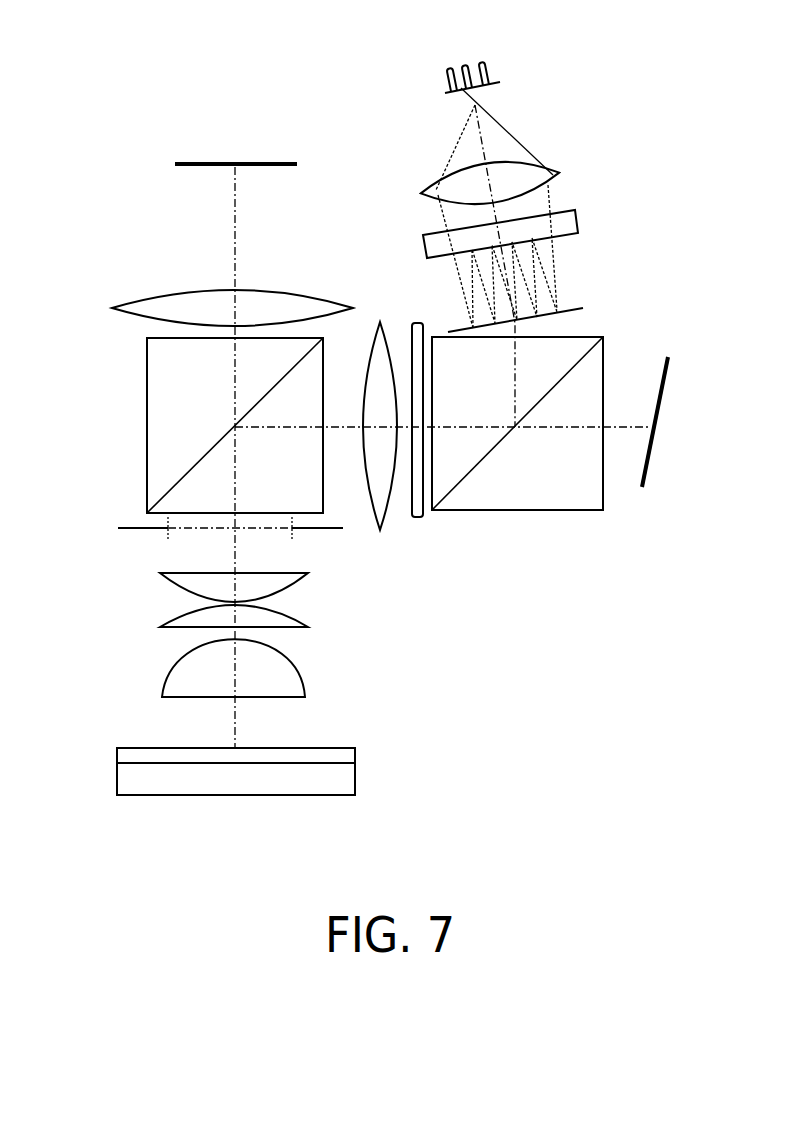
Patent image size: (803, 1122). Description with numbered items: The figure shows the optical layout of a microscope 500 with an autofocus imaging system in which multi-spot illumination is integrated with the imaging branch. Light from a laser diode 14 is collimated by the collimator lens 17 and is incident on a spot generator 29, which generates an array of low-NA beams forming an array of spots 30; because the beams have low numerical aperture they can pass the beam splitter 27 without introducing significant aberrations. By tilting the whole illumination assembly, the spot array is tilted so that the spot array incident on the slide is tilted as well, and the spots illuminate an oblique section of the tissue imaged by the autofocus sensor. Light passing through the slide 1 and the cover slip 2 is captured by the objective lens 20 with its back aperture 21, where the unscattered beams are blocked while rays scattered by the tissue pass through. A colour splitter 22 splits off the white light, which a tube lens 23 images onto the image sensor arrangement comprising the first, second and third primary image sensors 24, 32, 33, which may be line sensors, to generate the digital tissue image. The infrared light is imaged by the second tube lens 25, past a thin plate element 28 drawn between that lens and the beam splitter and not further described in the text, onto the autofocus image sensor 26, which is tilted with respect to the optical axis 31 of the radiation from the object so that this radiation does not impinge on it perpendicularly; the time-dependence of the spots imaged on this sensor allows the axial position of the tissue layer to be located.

The slide 1 is at (180, 780).
The cover slip 2 is at (125, 755).
The laser diode 14 is at (497, 82).
The collimator lens 17 is at (548, 172).
The objective lens 20 is at (190, 585).
The back aperture 21 is at (128, 527).
The colour splitter 22 is at (147, 406).
The tube lens 23 is at (143, 302).
The first primary image sensor 24 is at (208, 162).
The second tube lens 25 is at (376, 512).
The autofocus image sensor 26 is at (668, 356).
The beam splitter 27 is at (541, 468).
The optical plate 28 is at (421, 517).
The spot generator 29 is at (578, 220).
The array of spots 30 is at (580, 310).
The optical axis 31 is at (575, 427).
The second primary image sensor 32 is at (224, 125).
The third primary image sensor 33 is at (224, 125).
The microscope 500 is at (563, 747).